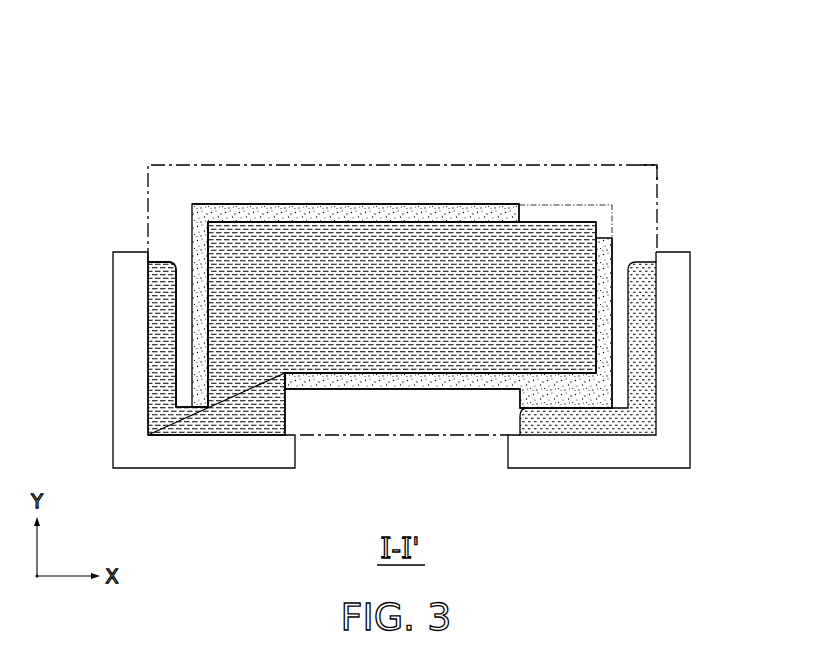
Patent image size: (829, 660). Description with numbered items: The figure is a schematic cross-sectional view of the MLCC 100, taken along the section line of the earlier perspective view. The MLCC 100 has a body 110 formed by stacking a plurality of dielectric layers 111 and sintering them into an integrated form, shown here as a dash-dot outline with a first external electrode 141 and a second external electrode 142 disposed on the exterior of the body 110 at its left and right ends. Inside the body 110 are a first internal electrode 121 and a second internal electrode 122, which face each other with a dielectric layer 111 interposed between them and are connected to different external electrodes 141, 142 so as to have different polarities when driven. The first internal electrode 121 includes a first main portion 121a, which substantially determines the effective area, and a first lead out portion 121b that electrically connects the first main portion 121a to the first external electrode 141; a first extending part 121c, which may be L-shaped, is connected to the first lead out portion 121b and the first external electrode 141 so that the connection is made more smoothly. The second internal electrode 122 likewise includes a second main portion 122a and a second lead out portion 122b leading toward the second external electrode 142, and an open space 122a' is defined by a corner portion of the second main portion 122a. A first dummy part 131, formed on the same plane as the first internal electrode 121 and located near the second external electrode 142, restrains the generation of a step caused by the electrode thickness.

The MLCC 100 is at (303, 51).
The body 110 is at (267, 165).
The dielectric layer 111 is at (640, 165).
The first internal electrode 121 is at (335, 221).
The first main portion 121a is at (372, 340).
The first lead out portion 121b is at (243, 402).
The first extending part 121c is at (159, 391).
The second internal electrode 122 is at (380, 204).
The second main portion 122a is at (361, 267).
The open space 122a' is at (572, 183).
The second lead out portion 122b is at (563, 398).
The first dummy part 131 is at (575, 422).
The first external electrode 141 is at (180, 463).
The second external electrode 142 is at (623, 463).